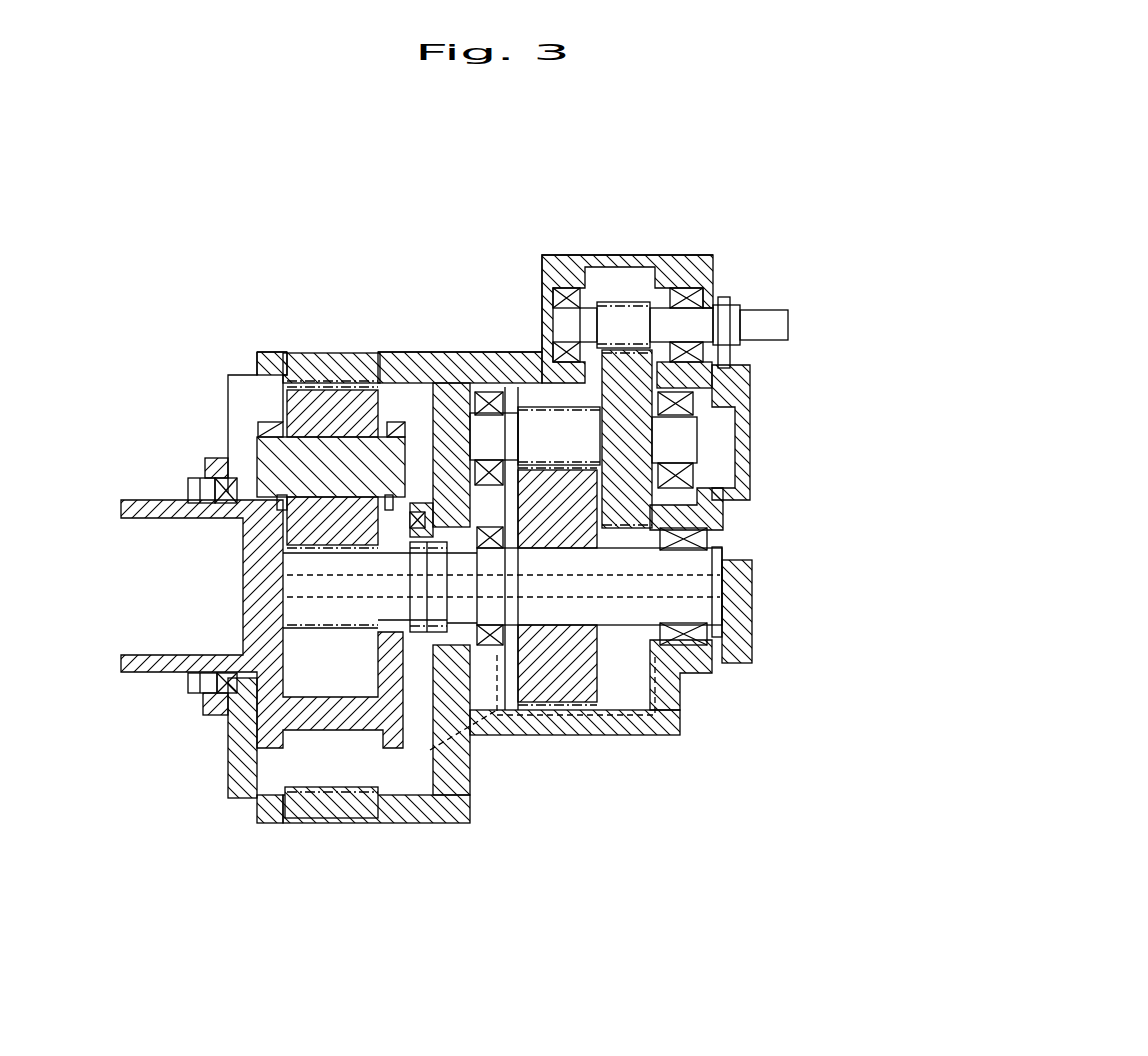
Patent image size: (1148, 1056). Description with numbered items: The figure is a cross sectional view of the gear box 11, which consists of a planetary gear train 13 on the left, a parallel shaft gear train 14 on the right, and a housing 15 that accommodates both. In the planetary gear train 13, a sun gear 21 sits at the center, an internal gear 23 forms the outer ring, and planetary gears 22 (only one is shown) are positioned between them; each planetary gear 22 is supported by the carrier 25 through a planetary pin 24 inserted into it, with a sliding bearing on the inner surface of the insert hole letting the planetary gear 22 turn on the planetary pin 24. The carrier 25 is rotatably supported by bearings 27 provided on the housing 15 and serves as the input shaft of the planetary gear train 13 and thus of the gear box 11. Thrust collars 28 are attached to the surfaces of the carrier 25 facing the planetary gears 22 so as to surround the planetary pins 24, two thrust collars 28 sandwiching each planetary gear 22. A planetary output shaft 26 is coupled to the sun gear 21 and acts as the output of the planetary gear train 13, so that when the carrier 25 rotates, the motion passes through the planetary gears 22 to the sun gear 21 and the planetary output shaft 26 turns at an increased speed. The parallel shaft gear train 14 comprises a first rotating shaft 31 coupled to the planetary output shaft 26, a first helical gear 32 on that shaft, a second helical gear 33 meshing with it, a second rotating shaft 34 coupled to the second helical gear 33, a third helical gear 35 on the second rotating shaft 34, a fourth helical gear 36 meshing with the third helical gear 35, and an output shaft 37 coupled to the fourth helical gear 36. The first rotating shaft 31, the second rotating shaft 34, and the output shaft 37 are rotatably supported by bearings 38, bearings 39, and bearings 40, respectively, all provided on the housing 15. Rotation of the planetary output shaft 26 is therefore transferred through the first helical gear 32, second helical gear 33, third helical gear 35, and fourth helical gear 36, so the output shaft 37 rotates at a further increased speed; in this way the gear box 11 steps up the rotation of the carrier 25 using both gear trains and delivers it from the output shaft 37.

The gear box 11 is at (131, 253).
The planetary gear train 13 is at (257, 738).
The parallel shaft gear train 14 is at (599, 685).
The housing 15 is at (448, 820).
The sun gear 21 is at (318, 608).
The planetary gear 22 is at (327, 400).
The internal gear 23 is at (330, 362).
The planetary pin 24 is at (230, 416).
The carrier 25 is at (149, 670).
The planetary output shaft 26 is at (398, 608).
The bearing 27 is at (205, 472).
The thrust collar 28 is at (275, 425).
The first rotating shaft 31 is at (707, 612).
The first helical gear 32 is at (578, 690).
The second helical gear 33 is at (555, 425).
The second rotating shaft 34 is at (687, 438).
The third helical gear 35 is at (648, 503).
The fourth helical gear 36 is at (627, 315).
The output shaft 37 is at (753, 313).
The bearing 38 is at (490, 645).
The bearing 39 is at (487, 395).
The bearing 40 is at (562, 298).